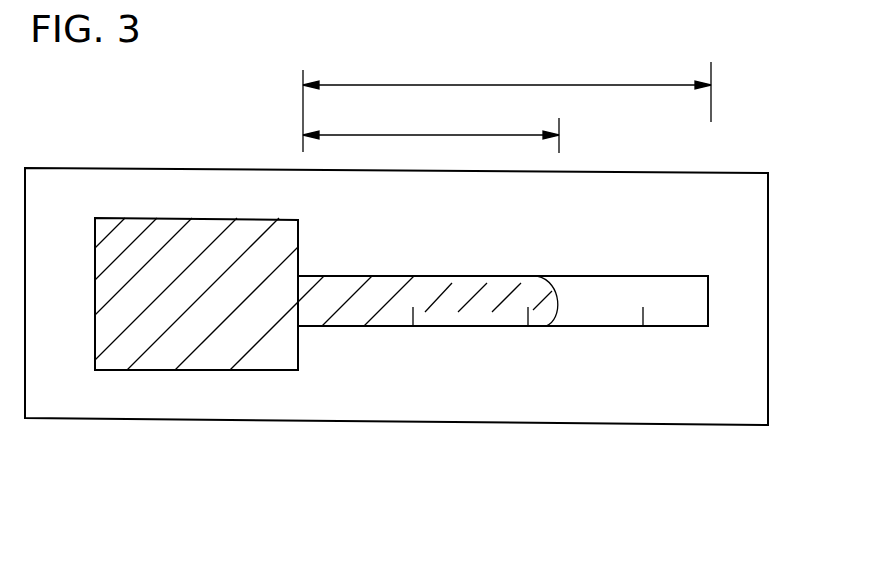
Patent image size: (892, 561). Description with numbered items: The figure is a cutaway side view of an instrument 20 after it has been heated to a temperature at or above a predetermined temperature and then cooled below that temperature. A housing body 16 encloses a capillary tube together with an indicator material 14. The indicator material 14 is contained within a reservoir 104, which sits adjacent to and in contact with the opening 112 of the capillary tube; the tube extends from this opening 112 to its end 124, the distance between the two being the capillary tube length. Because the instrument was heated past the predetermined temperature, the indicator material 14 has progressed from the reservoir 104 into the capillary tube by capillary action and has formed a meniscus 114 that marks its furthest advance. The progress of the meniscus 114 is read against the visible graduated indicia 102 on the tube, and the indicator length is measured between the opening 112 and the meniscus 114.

The instrument 20 is at (438, 528).
The housing body 16 is at (722, 198).
The indicator material 14 is at (153, 328).
The reservoir 104 is at (95, 322).
The opening 112 is at (292, 308).
The graduated indicia 102 is at (418, 317).
The meniscus 114 is at (557, 310).
The end 124 is at (708, 312).